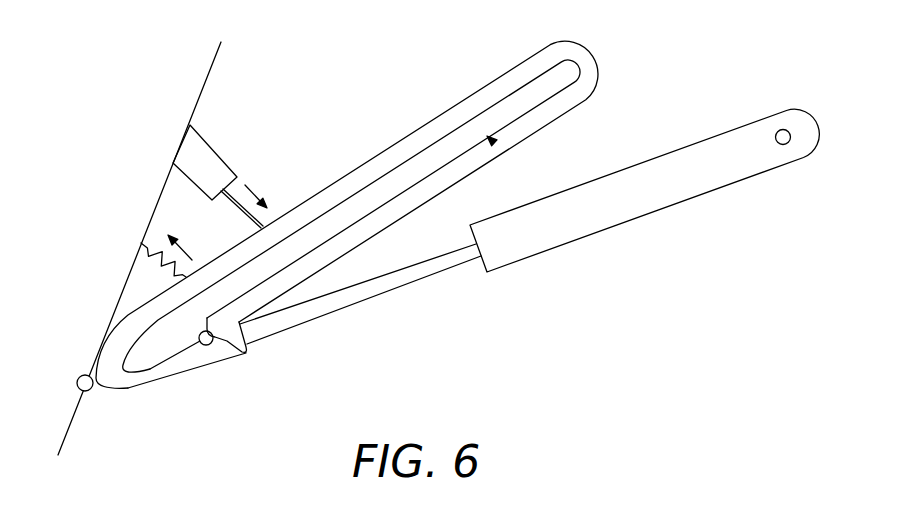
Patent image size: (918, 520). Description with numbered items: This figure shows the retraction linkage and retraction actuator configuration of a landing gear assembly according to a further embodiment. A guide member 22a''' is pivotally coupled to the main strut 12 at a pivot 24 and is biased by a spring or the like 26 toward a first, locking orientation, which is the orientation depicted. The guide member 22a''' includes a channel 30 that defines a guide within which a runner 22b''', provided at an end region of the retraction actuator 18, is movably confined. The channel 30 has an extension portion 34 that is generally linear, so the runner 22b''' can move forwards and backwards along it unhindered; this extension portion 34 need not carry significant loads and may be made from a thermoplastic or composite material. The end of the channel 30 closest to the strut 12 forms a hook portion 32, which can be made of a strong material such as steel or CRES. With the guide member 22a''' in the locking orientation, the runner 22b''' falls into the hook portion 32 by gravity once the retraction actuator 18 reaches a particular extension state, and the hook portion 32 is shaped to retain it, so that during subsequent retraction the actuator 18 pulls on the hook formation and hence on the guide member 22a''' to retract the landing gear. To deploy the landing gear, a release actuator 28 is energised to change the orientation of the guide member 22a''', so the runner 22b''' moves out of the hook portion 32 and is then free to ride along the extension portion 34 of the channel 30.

The main strut 12 is at (222, 60).
The retraction actuator 18 is at (602, 231).
The guide member 22a''' is at (347, 212).
The runner 22b''' is at (187, 373).
The pivot 24 is at (77, 381).
The spring 26 is at (136, 258).
The release actuator 28 is at (213, 150).
The channel 30 is at (494, 143).
The hook portion 32 is at (214, 341).
The extension portion 34 is at (377, 200).